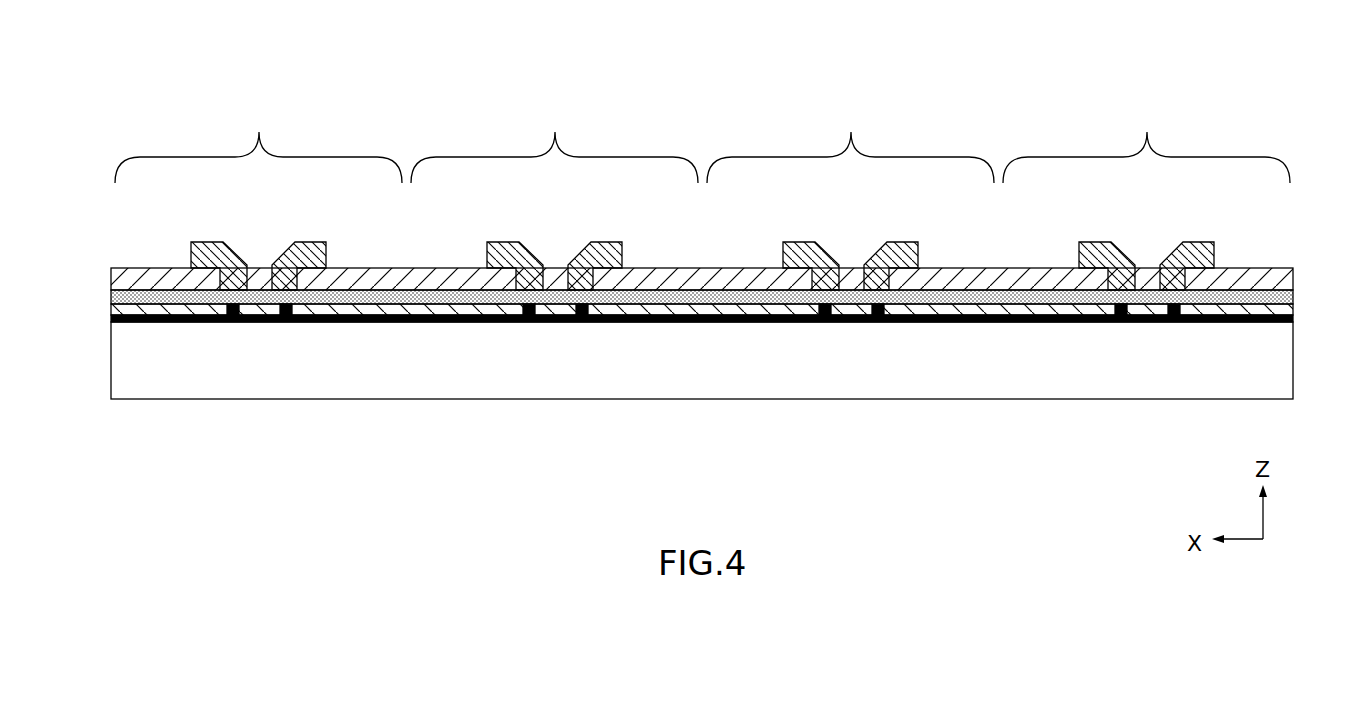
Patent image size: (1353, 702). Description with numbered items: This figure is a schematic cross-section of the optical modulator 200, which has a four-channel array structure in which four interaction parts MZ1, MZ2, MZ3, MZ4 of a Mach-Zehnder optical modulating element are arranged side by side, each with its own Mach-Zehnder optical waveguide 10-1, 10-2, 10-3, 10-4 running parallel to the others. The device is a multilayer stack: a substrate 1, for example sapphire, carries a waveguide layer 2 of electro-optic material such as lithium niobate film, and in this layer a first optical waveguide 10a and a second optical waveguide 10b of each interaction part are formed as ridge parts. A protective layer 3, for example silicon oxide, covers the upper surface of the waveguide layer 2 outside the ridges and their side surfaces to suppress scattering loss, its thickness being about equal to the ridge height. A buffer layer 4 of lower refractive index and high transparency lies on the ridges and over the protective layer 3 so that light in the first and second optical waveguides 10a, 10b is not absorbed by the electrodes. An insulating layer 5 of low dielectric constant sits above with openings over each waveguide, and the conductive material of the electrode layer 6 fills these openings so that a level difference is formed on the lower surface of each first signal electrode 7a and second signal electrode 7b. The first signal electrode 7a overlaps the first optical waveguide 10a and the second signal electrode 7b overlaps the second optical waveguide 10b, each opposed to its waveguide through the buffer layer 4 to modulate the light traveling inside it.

The optical modulator 200 is at (993, 64).
The substrate 1 is at (1293, 358).
The waveguide layer 2 is at (1293, 319).
The protective layer 3 is at (1293, 310).
The buffer layer 4 is at (1293, 293).
The insulating layer 5 is at (1293, 268).
The electrode layer 6 is at (1255, 257).
The first signal electrode 7a is at (210, 242).
The second signal electrode 7b is at (308, 242).
The first optical waveguide 10a is at (224, 309).
The second optical waveguide 10b is at (295, 309).
The Mach-Zehnder optical waveguide 10-1 is at (243, 190).
The Mach-Zehnder optical waveguide 10-2 is at (488, 129).
The Mach-Zehnder optical waveguide 10-3 is at (784, 129).
The Mach-Zehnder optical waveguide 10-4 is at (1080, 129).
The interaction part MZ1 is at (258, 140).
The interaction part MZ2 is at (554, 140).
The interaction part MZ3 is at (850, 140).
The interaction part MZ4 is at (1146, 140).